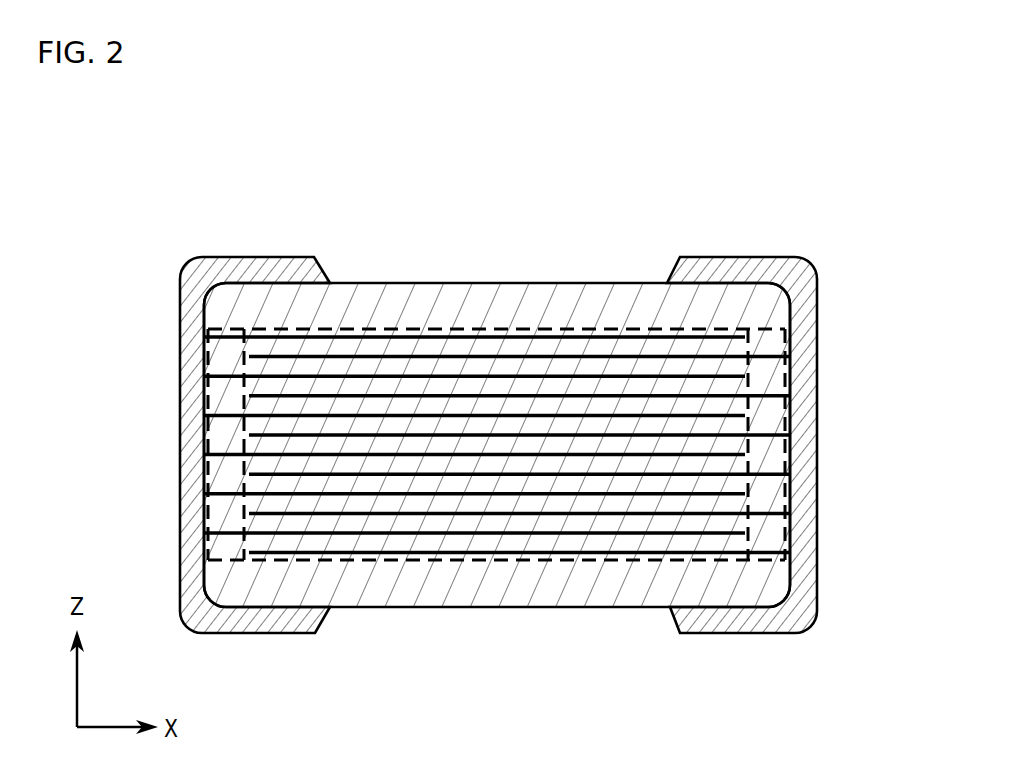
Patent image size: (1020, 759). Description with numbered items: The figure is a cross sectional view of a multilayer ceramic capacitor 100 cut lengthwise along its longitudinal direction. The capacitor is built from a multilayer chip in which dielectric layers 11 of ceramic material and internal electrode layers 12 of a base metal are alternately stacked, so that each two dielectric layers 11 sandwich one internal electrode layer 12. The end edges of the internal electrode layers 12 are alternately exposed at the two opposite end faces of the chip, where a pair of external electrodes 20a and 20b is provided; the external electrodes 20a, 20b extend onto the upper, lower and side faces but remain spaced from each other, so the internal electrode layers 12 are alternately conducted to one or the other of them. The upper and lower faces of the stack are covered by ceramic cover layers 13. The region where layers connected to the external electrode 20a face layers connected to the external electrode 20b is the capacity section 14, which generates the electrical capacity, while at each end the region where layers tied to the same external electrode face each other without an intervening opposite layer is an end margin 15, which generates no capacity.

The multilayer ceramic capacitor 100 is at (717, 202).
The external electrode 20a is at (202, 257).
The external electrode 20b is at (781, 257).
The dielectric layer 11 is at (615, 517).
The internal electrode layer 12 is at (440, 497).
The cover layer 13 is at (395, 298).
The capacity section 14 is at (520, 327).
The end margin 15 is at (228, 330).